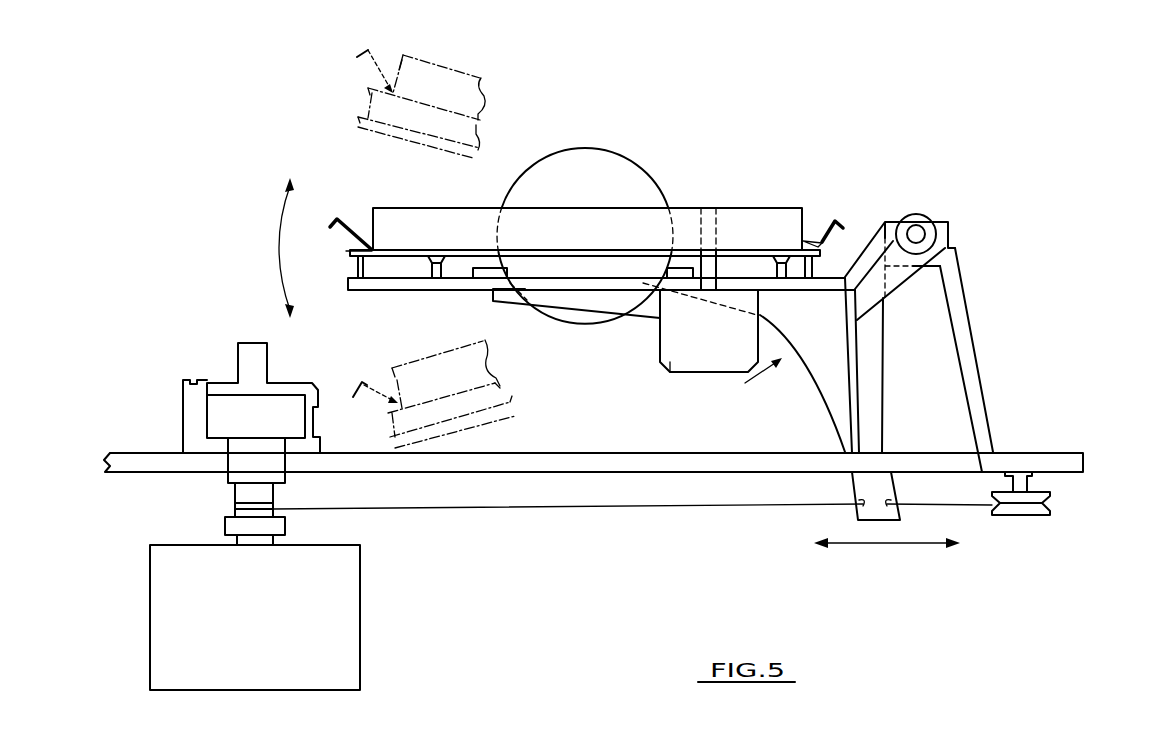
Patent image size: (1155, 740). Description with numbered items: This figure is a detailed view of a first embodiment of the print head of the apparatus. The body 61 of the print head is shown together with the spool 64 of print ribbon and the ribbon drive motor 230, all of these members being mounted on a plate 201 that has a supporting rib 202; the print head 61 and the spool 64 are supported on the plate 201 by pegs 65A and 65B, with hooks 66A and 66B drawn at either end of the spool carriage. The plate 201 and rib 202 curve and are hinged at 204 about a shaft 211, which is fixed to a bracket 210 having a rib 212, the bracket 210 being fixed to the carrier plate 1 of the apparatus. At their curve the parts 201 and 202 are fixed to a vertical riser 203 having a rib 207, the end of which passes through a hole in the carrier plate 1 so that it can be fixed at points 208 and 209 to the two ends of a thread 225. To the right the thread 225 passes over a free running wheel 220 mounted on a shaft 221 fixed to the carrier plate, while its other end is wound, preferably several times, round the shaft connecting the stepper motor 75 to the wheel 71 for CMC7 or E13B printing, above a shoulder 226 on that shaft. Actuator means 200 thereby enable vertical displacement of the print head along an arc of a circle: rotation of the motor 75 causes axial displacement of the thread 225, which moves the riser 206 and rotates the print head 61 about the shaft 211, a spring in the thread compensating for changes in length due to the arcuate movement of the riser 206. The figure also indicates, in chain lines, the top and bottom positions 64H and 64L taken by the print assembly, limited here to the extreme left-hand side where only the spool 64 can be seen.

The carrier plate 1 is at (633, 452).
The body of the print head 61 is at (620, 172).
The spool of print ribbon 64 is at (731, 208).
The top position 64H is at (477, 82).
The bottom position 64L is at (408, 373).
The peg 65A is at (430, 275).
The peg 65B is at (773, 263).
The front hook 66A is at (367, 240).
The rear hook 66B is at (823, 218).
The wheel 71 is at (228, 413).
The stepper motor 75 is at (268, 641).
The actuator means 200 is at (709, 348).
The plate 201 is at (482, 285).
The supporting rib 202 is at (593, 300).
The vertical riser 203 is at (868, 243).
The hinge 204 is at (920, 213).
The riser 206 is at (863, 408).
The rib 207 is at (820, 372).
The fixing point 208 is at (860, 508).
The fixing point 209 is at (893, 508).
The bracket 210 is at (972, 313).
The shaft 211 is at (923, 230).
The rib 212 is at (932, 388).
The free running wheel 220 is at (1032, 518).
The shaft 221 is at (1027, 483).
The thread 225 is at (595, 498).
The shoulder 226 is at (225, 523).
The ribbon drive motor 230 is at (683, 345).